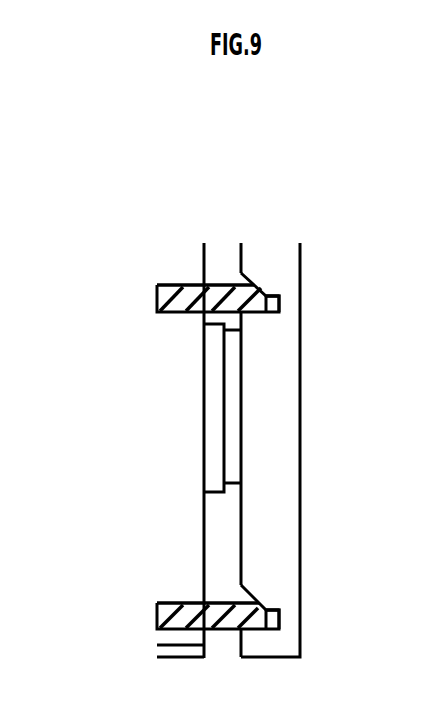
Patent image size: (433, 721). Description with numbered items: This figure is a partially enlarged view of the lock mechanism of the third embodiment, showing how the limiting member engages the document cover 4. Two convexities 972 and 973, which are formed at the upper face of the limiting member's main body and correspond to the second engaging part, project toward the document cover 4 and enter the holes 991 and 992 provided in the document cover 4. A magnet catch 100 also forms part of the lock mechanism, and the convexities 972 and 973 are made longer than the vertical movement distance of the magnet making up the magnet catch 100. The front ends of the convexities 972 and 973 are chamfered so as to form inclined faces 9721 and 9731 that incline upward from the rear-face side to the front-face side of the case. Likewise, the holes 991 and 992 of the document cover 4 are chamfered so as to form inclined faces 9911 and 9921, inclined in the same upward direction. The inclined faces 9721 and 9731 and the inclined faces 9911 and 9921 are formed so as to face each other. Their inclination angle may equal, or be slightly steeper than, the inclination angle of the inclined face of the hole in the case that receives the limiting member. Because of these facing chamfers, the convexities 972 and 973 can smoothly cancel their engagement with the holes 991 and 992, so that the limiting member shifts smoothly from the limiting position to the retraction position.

The convexity 972 is at (245, 300).
The inclined face 9721 is at (180, 285).
The inclined face 9911 is at (264, 290).
The hole 991 is at (280, 300).
The magnet catch 100 is at (233, 403).
The document cover 4 is at (277, 523).
The convexity 973 is at (240, 616).
The inclined face 9731 is at (180, 603).
The inclined face 9921 is at (264, 604).
The hole 992 is at (280, 617).